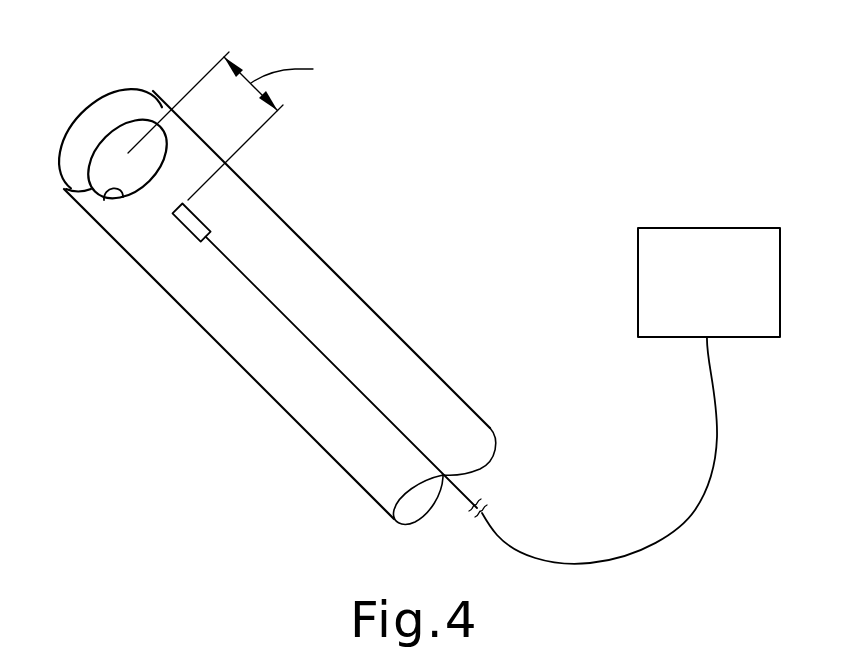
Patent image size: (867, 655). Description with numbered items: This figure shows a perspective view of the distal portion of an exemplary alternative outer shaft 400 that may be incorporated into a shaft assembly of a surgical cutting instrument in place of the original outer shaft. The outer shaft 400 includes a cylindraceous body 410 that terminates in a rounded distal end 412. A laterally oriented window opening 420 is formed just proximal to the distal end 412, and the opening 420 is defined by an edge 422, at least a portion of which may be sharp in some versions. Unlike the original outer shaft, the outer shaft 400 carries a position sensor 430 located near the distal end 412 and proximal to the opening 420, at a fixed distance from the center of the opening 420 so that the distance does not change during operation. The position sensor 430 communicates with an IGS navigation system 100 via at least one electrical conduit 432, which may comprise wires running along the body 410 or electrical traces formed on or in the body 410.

The IGS navigation system 100 is at (733, 300).
The outer shaft 400 is at (386, 191).
The cylindraceous body 410 is at (350, 301).
The rounded distal end 412 is at (125, 97).
The window opening 420 is at (190, 119).
The edge 422 is at (123, 197).
The position sensor 430 is at (195, 216).
The electrical conduit 432 is at (252, 284).